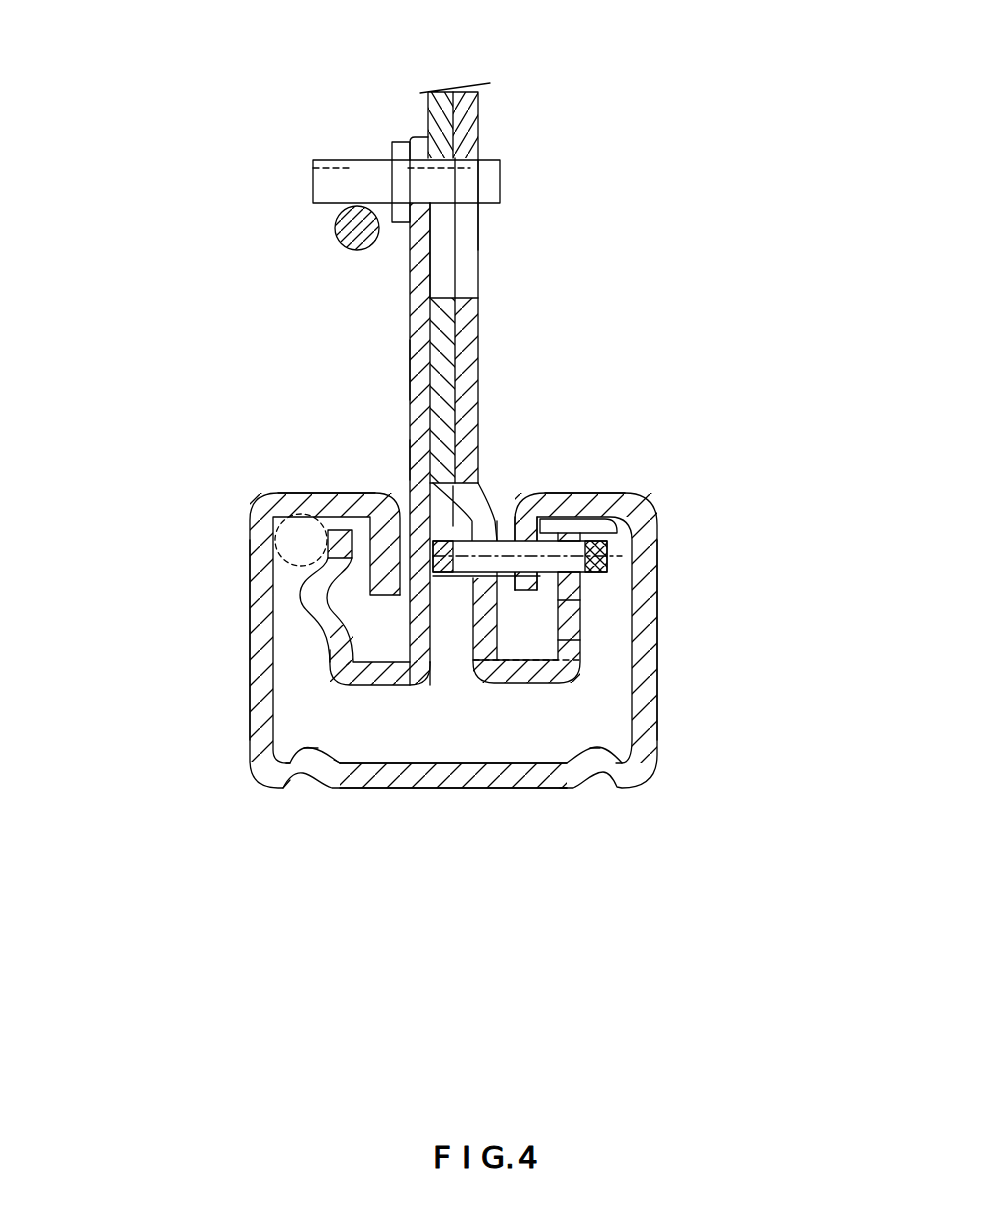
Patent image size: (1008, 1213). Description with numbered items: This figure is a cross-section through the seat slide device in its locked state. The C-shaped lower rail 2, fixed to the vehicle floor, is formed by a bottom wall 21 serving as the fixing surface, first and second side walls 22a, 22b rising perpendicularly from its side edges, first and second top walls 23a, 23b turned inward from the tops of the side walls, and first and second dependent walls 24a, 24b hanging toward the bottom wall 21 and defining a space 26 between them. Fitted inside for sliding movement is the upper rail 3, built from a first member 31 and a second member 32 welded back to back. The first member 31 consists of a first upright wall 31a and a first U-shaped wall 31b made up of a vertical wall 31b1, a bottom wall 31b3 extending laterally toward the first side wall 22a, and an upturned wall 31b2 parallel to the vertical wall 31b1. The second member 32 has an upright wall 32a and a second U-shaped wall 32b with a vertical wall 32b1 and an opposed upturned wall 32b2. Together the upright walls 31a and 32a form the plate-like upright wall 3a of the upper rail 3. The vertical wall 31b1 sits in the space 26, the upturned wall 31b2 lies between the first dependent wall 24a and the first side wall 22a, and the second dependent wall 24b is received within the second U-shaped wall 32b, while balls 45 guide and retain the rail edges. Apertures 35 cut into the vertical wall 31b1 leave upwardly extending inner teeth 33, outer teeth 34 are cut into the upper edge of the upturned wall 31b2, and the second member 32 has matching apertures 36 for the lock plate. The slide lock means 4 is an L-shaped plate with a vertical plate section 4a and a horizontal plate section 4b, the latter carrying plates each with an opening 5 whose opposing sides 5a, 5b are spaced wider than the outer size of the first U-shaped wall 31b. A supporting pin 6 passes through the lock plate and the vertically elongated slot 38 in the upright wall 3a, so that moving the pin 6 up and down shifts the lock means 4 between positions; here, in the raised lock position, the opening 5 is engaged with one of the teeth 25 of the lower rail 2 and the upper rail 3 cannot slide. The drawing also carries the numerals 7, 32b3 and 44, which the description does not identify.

The lower rail 2 is at (440, 788).
The upper rail 3 is at (510, 685).
The upright wall 3a is at (480, 217).
The slide lock means 4 is at (410, 327).
The vertical plate section 4a is at (410, 373).
The horizontal plate section 4b is at (420, 580).
The opening 5 is at (640, 522).
The opposing side 5a is at (515, 512).
The opposing side 5b is at (578, 591).
The supporting pin 6 is at (343, 162).
The pin 7 is at (337, 222).
The bottom wall 21 is at (553, 790).
The first side wall 22a is at (657, 690).
The second side wall 22b is at (250, 683).
The first top wall 23a is at (605, 493).
The second top wall 23b is at (318, 493).
The first dependent wall 24a is at (580, 610).
The second dependent wall 24b is at (305, 578).
The teeth 25 is at (650, 785).
The space 26 is at (402, 500).
The first member 31 is at (480, 112).
The first upright wall 31a is at (477, 327).
The first U-shaped wall 31b is at (592, 665).
The vertical wall 31b1 is at (437, 662).
The upturned wall 31b2 is at (580, 623).
The bottom wall 31b3 is at (548, 655).
The second member 32 is at (428, 113).
The upright wall 32a is at (430, 310).
The second U-shaped wall 32b is at (362, 662).
The vertical wall 32b1 is at (430, 662).
The upturned wall 32b2 is at (415, 605).
The recess projection 32b3 is at (313, 748).
The inner teeth 33 is at (363, 686).
The outer teeth 34 is at (585, 649).
The aperture 35 is at (520, 503).
The apertures 36 is at (490, 500).
The slot 38 is at (463, 258).
The pin 44 is at (607, 560).
The balls 45 is at (300, 538).